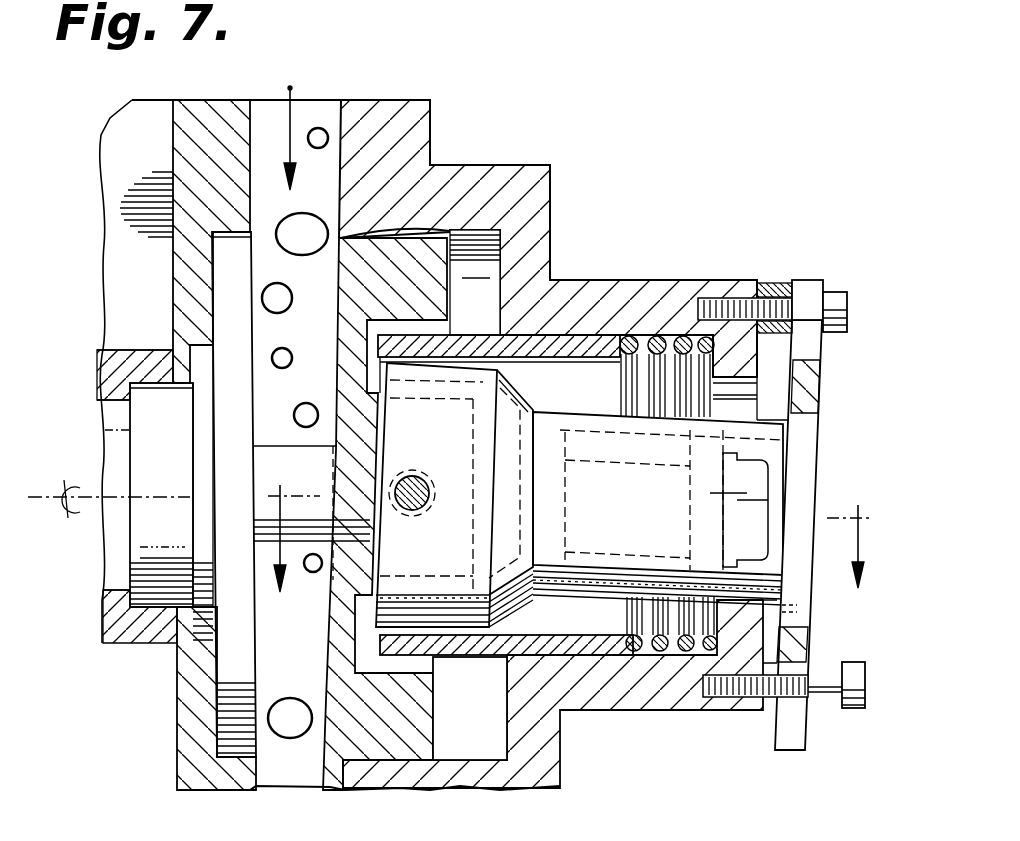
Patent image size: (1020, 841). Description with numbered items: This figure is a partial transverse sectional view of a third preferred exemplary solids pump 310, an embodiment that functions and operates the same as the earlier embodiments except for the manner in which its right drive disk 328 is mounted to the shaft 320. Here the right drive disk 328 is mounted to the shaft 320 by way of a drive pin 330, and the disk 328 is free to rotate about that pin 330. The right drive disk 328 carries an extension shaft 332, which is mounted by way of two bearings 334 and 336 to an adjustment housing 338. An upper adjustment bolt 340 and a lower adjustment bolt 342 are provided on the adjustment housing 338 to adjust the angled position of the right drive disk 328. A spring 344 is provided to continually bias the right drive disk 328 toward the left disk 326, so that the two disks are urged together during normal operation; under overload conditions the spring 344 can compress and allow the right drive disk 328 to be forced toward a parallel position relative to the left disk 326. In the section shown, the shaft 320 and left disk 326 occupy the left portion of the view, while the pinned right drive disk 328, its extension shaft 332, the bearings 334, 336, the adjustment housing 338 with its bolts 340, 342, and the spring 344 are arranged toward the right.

The solids pump 310 is at (510, 140).
The shaft 320 is at (270, 517).
The left disk 326 is at (230, 281).
The right drive disk 328 is at (430, 278).
The drive pin 330 is at (456, 428).
The extension shaft 332 is at (598, 543).
The bearing 334 is at (740, 493).
The bearing 336 is at (548, 558).
The adjustment housing 338 is at (788, 712).
The upper adjustment bolt 340 is at (843, 292).
The lower adjustment bolt 342 is at (852, 710).
The spring 344 is at (658, 307).